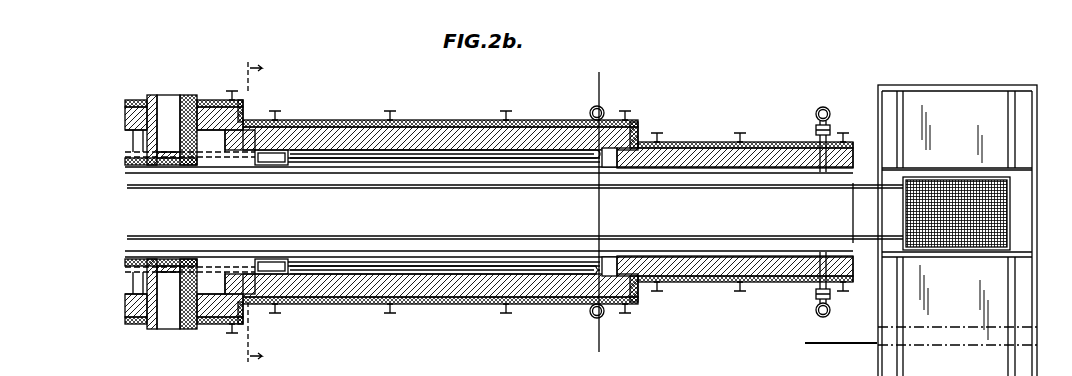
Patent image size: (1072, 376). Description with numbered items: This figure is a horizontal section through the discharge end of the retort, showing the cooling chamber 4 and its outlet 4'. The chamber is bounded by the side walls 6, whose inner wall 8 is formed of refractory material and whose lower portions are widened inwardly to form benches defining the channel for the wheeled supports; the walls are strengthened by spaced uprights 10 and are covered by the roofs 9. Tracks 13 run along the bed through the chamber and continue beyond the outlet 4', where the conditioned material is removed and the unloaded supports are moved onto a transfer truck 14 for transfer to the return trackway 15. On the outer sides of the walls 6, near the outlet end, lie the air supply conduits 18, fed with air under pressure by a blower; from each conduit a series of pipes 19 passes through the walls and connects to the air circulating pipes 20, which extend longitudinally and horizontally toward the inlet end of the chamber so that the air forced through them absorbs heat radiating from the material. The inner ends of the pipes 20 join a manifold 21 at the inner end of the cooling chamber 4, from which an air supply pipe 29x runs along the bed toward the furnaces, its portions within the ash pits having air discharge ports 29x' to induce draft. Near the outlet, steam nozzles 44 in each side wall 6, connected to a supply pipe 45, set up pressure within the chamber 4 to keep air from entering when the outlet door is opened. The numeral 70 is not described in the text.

The cooling chamber 4 is at (514, 193).
The outlet 4' is at (860, 212).
The side walls 6 is at (440, 301).
The inner wall 8 is at (264, 212).
The roofs 9 is at (597, 211).
The uprights 10 is at (500, 307).
The tracks 13 is at (697, 235).
The transfer truck 14 is at (1025, 222).
The return trackway 15 is at (839, 370).
The air supply conduits 18 is at (628, 322).
The pipes 19 is at (600, 158).
The air circulating pipe 20 is at (560, 272).
The manifold 21 is at (288, 167).
The air supply pipe 29x is at (208, 158).
The air discharge ports 29x' is at (172, 310).
The steam nozzles 44 is at (815, 291).
The supply pipe 45 is at (816, 311).
The T-bolts 70 is at (740, 292).